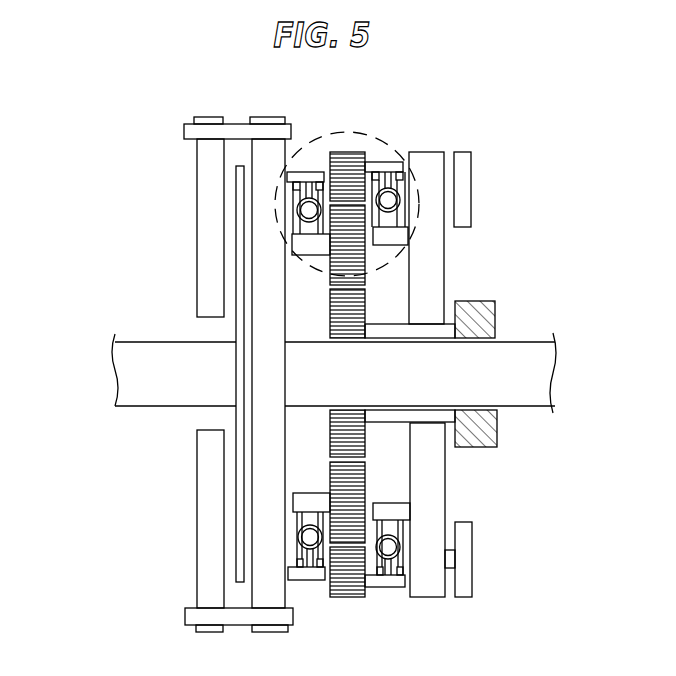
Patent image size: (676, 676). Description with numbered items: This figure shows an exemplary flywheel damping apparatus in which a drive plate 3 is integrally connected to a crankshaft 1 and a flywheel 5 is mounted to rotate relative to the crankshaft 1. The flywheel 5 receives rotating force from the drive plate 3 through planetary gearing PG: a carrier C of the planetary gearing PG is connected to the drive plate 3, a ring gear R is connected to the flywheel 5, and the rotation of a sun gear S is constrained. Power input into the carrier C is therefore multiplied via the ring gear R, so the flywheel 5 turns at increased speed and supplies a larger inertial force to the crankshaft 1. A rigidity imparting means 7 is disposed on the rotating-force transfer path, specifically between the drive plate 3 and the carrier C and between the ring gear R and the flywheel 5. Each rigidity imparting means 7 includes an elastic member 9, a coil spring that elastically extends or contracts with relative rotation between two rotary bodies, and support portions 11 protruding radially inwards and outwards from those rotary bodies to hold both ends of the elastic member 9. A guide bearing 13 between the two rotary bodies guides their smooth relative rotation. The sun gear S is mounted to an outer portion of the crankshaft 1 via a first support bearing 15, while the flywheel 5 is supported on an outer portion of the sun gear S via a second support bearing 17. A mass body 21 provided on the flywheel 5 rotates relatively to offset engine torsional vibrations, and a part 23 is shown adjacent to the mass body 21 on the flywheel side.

The crankshaft 1 is at (560, 372).
The drive plate 3 is at (265, 158).
The flywheel 5 is at (435, 178).
The rigidity imparting means 7 is at (418, 200).
The elastic member 9 is at (297, 208).
The support portions 11 is at (308, 186).
The guide bearing 13 is at (296, 188).
The first support bearing 15 is at (442, 340).
The second support bearing 17 is at (427, 322).
The mass body 21 is at (468, 585).
The boss 23 is at (452, 559).
The carrier C is at (300, 247).
The sun gear S is at (338, 318).
The ring gear R is at (290, 578).
The planetary gearing PG is at (107, 515).